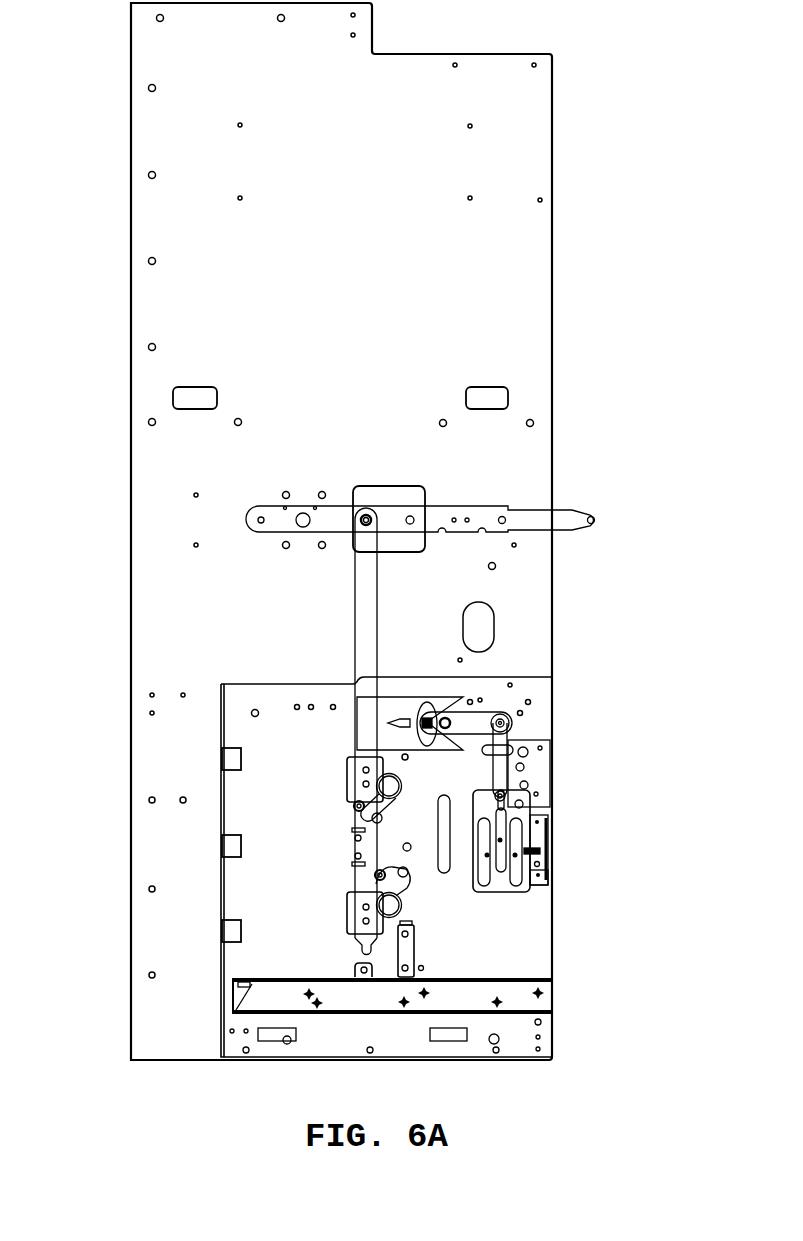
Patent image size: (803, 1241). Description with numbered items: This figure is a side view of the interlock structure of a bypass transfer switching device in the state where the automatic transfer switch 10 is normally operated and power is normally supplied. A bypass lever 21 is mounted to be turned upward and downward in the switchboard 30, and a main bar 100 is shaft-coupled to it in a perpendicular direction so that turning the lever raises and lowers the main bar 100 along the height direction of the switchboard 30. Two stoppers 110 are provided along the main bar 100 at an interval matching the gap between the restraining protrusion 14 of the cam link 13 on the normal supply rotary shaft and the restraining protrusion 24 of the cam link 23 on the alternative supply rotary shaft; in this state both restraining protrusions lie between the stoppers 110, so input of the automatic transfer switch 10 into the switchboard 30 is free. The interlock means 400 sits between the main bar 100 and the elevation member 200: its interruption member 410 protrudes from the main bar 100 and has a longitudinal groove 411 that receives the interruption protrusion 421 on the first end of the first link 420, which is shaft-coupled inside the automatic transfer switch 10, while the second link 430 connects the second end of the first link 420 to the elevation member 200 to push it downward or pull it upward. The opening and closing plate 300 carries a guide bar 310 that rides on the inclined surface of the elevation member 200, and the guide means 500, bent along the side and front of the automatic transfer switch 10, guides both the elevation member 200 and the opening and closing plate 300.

The automatic transfer switch 10 is at (228, 963).
The cam link 13 is at (543, 830).
The restraining protrusion 14 is at (355, 808).
The bypass lever 21 is at (486, 513).
The cam link 23 is at (414, 930).
The restraining protrusion 24 is at (374, 874).
The switchboard 30 is at (537, 246).
The main bar 100 is at (367, 600).
The stoppers 110 is at (347, 905).
The elevation member 200 is at (500, 893).
The opening and closing plate 300 is at (548, 793).
The guide bar 310 is at (541, 852).
The interlock means 400 is at (532, 702).
The interruption member 410 is at (402, 700).
The longitudinal groove 411 is at (387, 723).
The first link 420 is at (428, 738).
The interruption protrusion 421 is at (510, 723).
The second link 430 is at (505, 795).
The guide means 500 is at (541, 876).